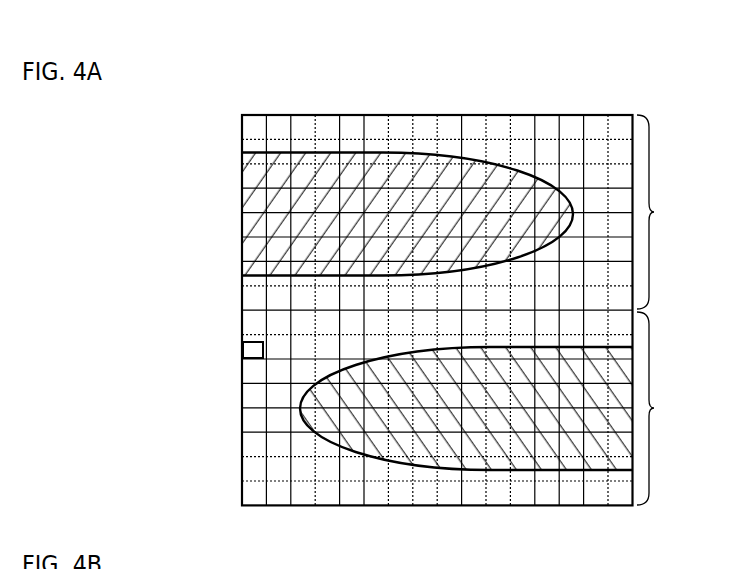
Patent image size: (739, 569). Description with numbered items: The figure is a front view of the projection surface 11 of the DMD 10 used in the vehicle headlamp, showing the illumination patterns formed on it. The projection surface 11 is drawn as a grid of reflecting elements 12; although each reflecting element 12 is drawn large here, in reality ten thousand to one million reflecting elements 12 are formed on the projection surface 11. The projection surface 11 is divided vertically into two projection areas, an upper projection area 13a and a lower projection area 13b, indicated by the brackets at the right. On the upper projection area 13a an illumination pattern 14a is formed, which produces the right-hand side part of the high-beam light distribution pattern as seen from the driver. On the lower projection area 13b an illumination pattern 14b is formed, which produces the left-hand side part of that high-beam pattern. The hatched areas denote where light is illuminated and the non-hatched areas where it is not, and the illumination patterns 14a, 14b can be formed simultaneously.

The DMD 10 is at (539, 98).
The projection surface 11 is at (577, 145).
The reflecting element 12 is at (277, 345).
The upper projection area 13a is at (654, 212).
The lower projection area 13b is at (654, 408).
The illumination pattern 14a is at (407, 172).
The illumination pattern 14b is at (475, 425).